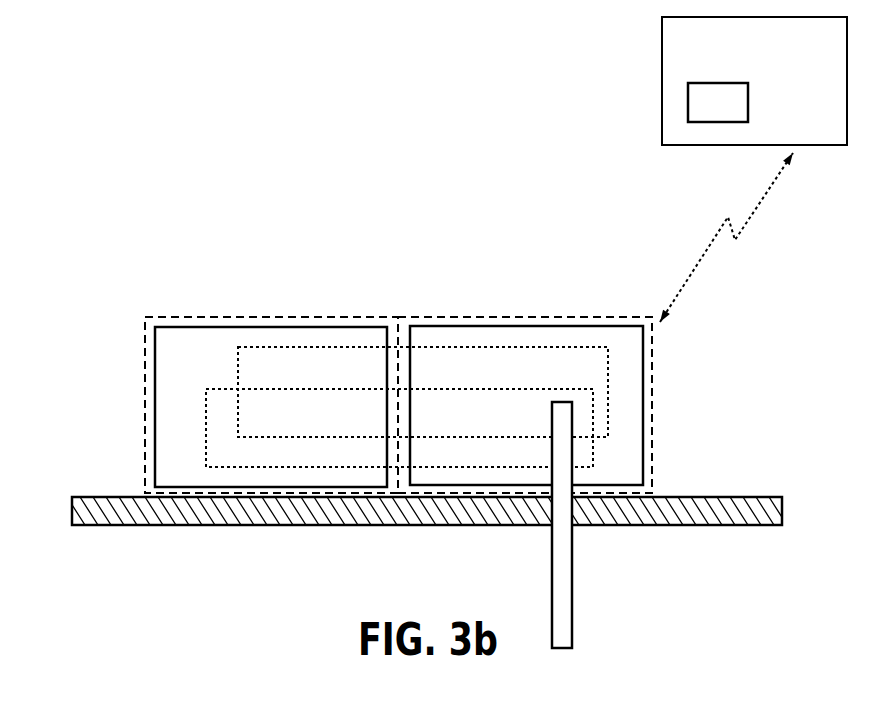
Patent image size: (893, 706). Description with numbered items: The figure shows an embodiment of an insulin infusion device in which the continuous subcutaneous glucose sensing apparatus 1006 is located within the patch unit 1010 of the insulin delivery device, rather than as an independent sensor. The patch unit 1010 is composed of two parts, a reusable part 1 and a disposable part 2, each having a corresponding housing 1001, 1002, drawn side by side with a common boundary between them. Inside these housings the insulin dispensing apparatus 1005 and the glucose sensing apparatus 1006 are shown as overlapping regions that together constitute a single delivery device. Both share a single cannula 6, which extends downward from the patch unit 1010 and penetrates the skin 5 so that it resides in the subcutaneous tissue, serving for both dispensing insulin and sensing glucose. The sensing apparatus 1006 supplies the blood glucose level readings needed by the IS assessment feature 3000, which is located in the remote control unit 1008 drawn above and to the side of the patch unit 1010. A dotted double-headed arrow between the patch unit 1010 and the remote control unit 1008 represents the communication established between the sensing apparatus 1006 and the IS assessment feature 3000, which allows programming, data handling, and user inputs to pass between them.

The reusable part 1 is at (178, 403).
The disposable part 2 is at (628, 363).
The skin 5 is at (785, 518).
The cannula 6 is at (552, 580).
The housing 1001 is at (227, 317).
The housing 1002 is at (653, 425).
The insulin dispensing apparatus 1005 is at (207, 428).
The continuous subcutaneous glucose sensing apparatus 1006 is at (577, 340).
The remote control unit 1008 is at (645, 45).
The patch unit 1010 is at (370, 222).
The IS assessment feature 3000 is at (693, 105).